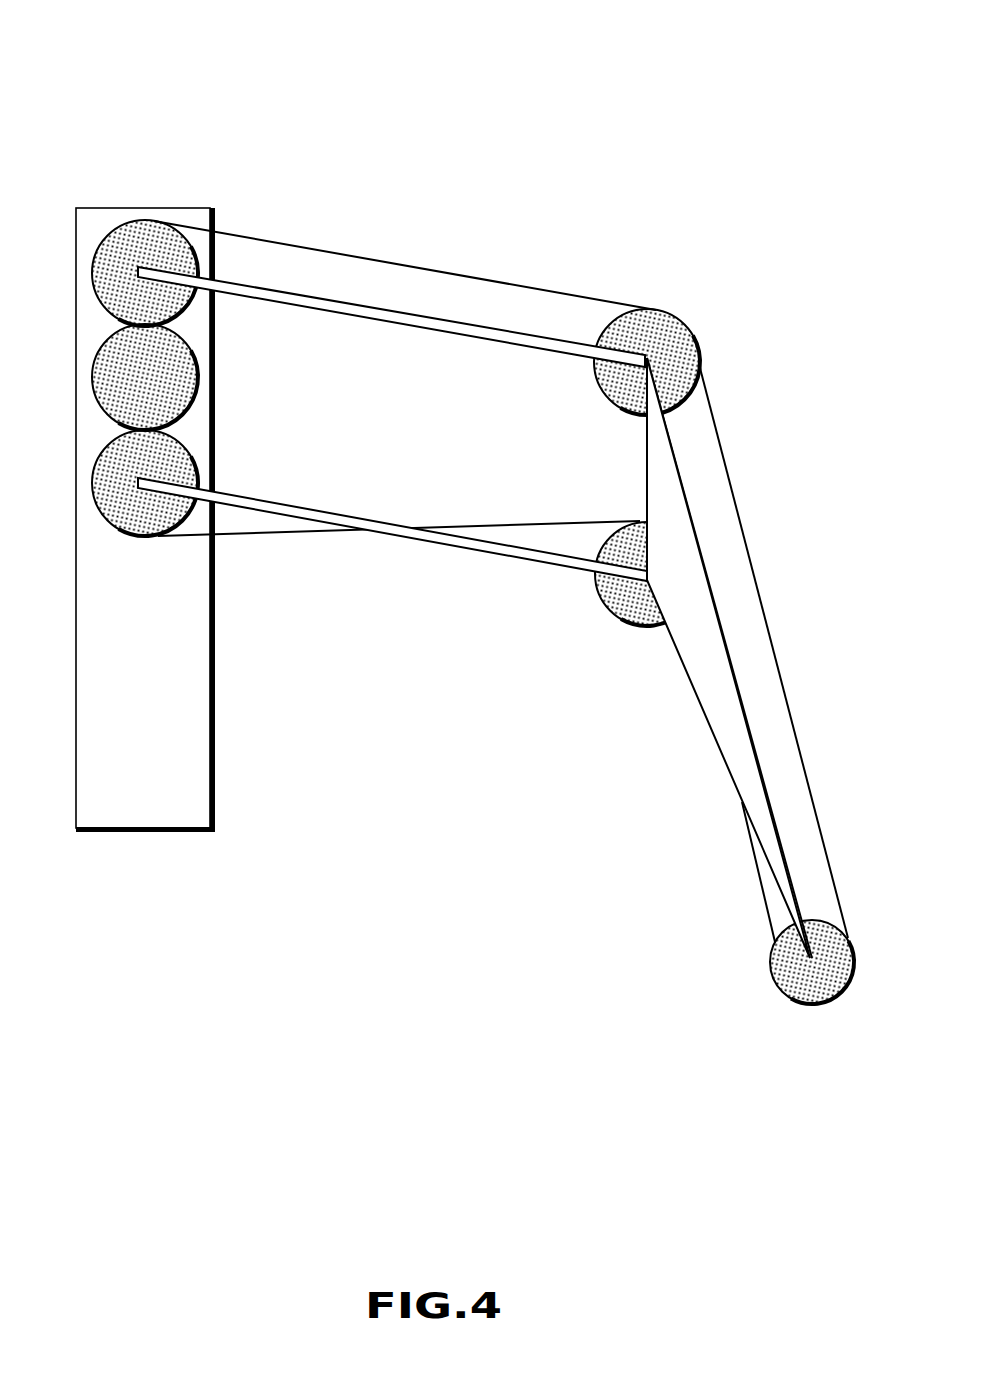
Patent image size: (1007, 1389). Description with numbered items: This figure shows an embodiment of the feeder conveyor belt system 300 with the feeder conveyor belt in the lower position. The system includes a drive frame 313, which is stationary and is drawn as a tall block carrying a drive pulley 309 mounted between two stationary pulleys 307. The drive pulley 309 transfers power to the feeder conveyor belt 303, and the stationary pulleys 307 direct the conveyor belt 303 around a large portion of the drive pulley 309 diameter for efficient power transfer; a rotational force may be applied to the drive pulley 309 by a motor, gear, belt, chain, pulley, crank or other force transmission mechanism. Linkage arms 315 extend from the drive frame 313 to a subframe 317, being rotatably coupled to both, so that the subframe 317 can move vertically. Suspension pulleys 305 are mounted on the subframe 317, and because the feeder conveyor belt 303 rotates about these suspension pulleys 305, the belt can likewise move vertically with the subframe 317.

The feeder conveyor belt system 300 is at (470, 54).
The feeder conveyor belt 303 is at (760, 588).
The suspension pulleys 305 is at (675, 325).
The stationary pulleys 307 is at (95, 268).
The drive pulley 309 is at (98, 357).
The drive frame 313 is at (137, 207).
The linkage arms 315 is at (343, 313).
The subframe 317 is at (702, 679).